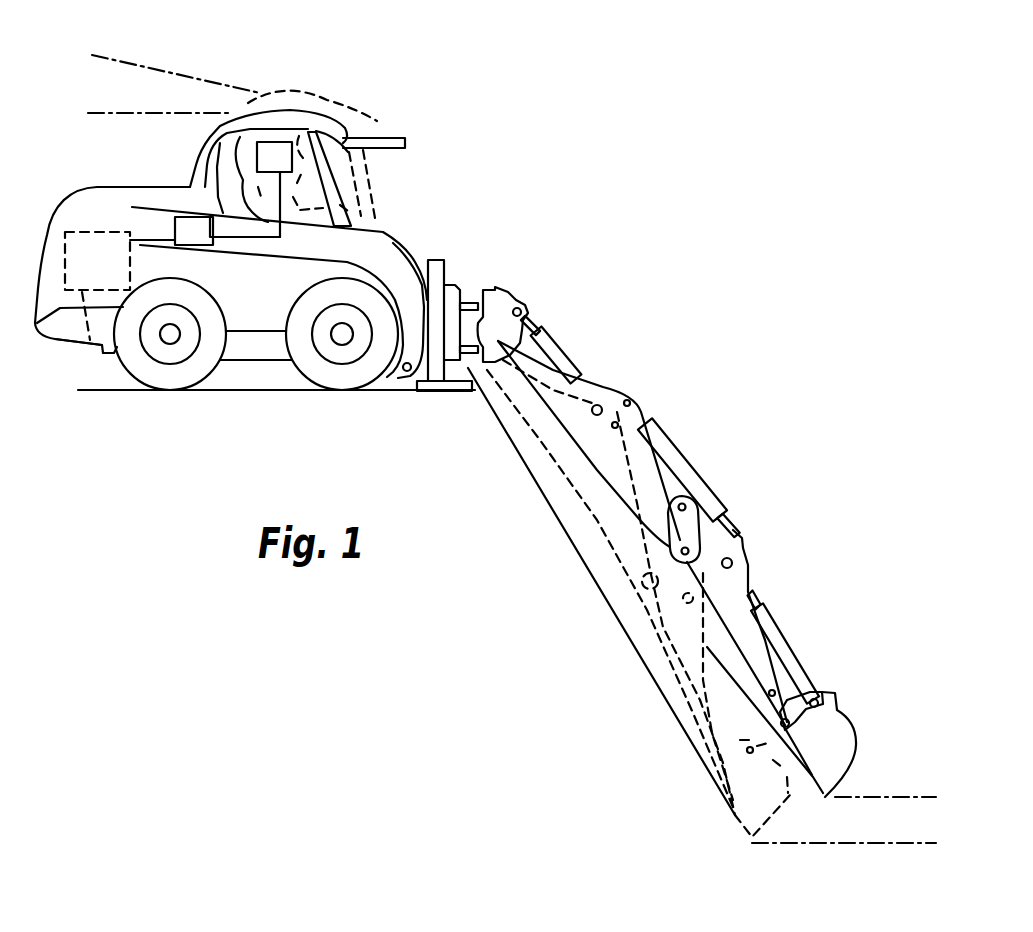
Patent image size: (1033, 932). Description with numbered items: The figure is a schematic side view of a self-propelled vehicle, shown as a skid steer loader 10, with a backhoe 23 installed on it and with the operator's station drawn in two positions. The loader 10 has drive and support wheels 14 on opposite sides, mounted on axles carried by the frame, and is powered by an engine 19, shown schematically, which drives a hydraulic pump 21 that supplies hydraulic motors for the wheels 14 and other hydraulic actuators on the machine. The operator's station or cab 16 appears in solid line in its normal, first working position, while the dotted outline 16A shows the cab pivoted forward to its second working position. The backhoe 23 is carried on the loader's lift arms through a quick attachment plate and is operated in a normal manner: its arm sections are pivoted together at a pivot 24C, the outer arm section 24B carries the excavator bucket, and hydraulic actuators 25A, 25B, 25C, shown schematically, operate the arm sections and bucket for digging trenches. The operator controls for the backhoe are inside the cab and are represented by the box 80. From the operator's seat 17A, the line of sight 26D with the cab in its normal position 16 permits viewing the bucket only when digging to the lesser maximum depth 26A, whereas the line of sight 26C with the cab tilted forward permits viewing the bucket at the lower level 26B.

The skid steer loader 10 is at (65, 122).
The drive and support wheels 14 is at (164, 377).
The operator's station or cab 16 is at (207, 152).
The cab forward pivoted position 16A is at (373, 131).
The operator's seat 17A is at (376, 216).
The engine 19 is at (80, 347).
The hydraulic pump 21 is at (183, 225).
The operator controls 80 is at (352, 179).
The backhoe 23 is at (540, 468).
The arm section 24B is at (730, 590).
The pivot 24C is at (677, 528).
The hydraulic actuator 25A is at (553, 355).
The hydraulic actuator 25B is at (660, 447).
The hydraulic actuator 25C is at (773, 627).
The lesser maximum depth line 26A is at (843, 796).
The lower level line 26B is at (803, 843).
The line of sight 26C is at (633, 649).
The line of sight 26D is at (733, 677).